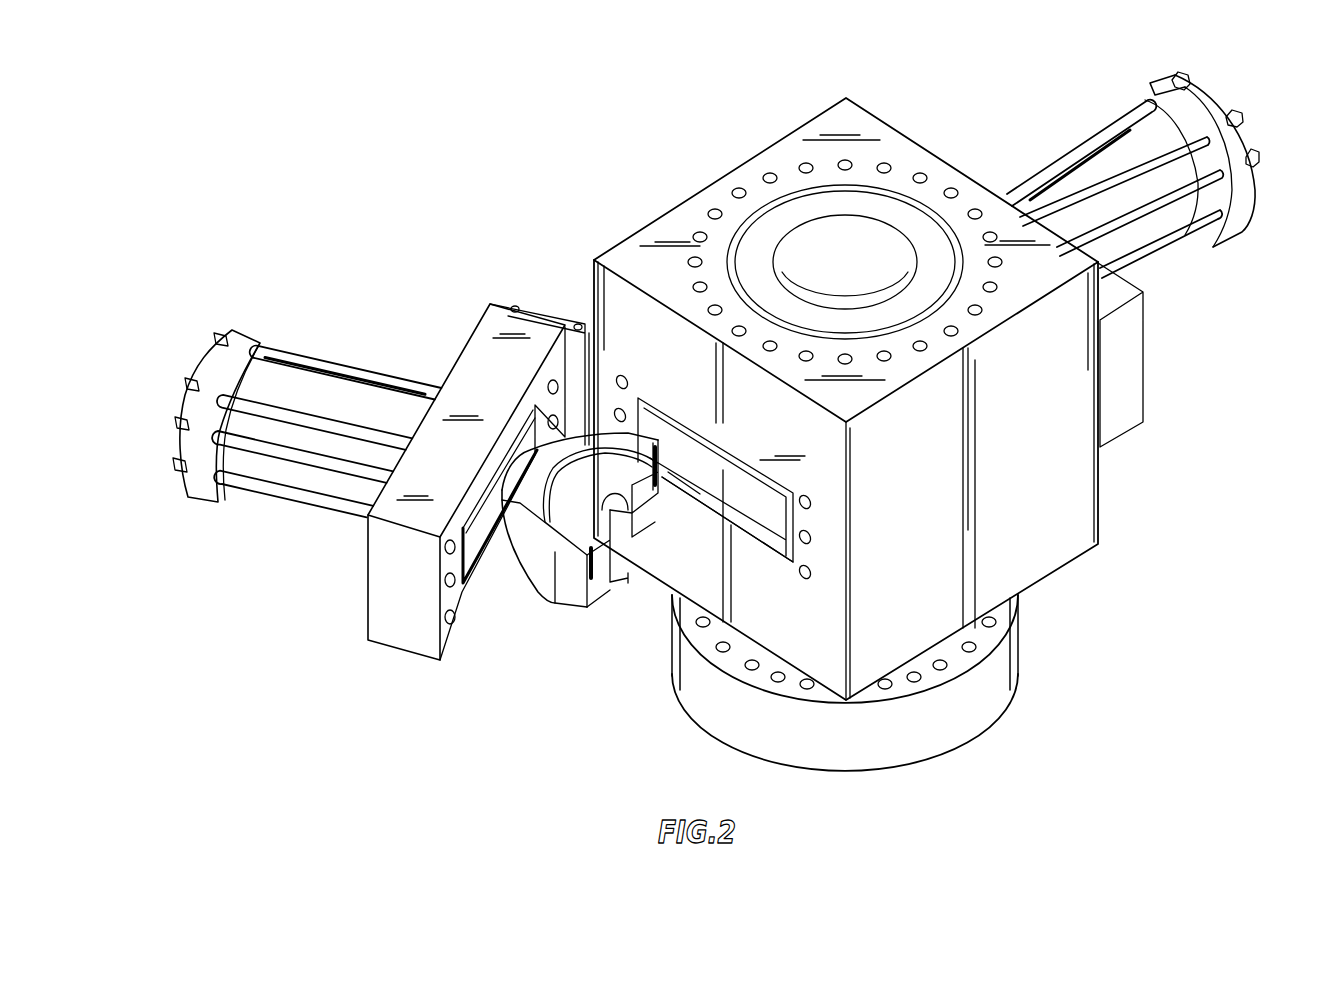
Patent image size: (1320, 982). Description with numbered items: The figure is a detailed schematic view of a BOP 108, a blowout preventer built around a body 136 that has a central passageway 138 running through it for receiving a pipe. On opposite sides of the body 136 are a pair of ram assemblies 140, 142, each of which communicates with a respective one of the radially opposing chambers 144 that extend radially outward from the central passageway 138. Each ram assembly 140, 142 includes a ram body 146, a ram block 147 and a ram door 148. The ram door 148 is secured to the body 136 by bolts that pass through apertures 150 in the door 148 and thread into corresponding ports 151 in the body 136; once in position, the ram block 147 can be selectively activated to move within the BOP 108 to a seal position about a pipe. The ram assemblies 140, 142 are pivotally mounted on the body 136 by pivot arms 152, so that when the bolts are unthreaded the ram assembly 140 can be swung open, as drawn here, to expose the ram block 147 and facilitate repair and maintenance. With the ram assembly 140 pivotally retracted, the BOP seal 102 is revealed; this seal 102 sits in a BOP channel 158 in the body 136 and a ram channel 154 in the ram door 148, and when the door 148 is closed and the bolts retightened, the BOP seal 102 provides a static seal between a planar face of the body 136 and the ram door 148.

The BOP seal 102 is at (478, 565).
The BOP 108 is at (364, 157).
The body 136 is at (1062, 500).
The central passageway 138 is at (805, 222).
The ram assembly 140 is at (276, 412).
The ram assembly 142 is at (1010, 117).
The chambers 144 is at (762, 510).
The ram body 146 is at (213, 502).
The ram block 147 is at (570, 605).
The ram door 148 is at (440, 526).
The apertures 150 is at (447, 622).
The ports 151 is at (812, 566).
The pivot arms 152 is at (533, 307).
The ram channel 154 is at (533, 425).
The BOP channel 158 is at (757, 492).